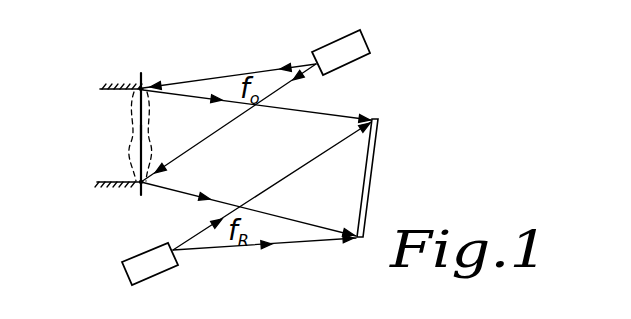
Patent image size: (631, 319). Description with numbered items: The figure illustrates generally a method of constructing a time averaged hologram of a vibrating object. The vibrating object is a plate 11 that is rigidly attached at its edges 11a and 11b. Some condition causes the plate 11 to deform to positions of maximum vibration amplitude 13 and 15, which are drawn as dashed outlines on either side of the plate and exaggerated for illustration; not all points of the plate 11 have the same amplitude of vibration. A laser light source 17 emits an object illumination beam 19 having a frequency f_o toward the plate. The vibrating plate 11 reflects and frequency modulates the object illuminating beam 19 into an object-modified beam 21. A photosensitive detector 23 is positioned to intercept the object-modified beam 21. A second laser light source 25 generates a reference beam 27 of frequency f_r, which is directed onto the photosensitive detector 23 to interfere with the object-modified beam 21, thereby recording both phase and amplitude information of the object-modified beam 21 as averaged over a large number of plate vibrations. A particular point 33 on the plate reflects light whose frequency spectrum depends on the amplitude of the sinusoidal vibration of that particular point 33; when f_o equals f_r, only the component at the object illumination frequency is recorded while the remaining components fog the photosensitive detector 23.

The plate 11 is at (137, 178).
The edge of plate 11a is at (138, 91).
The edge of plate 11b is at (134, 185).
The position of maximum vibration amplitude 13 is at (149, 105).
The position of maximum vibration amplitude 15 is at (130, 108).
The laser light source 17 is at (360, 38).
The object illumination beam 19 is at (204, 82).
The object-modified beam 21 is at (298, 117).
The photosensitive detector 23 is at (378, 129).
The laser light source 25 is at (147, 272).
The reference beam 27 is at (213, 245).
The particular point 33 is at (141, 133).